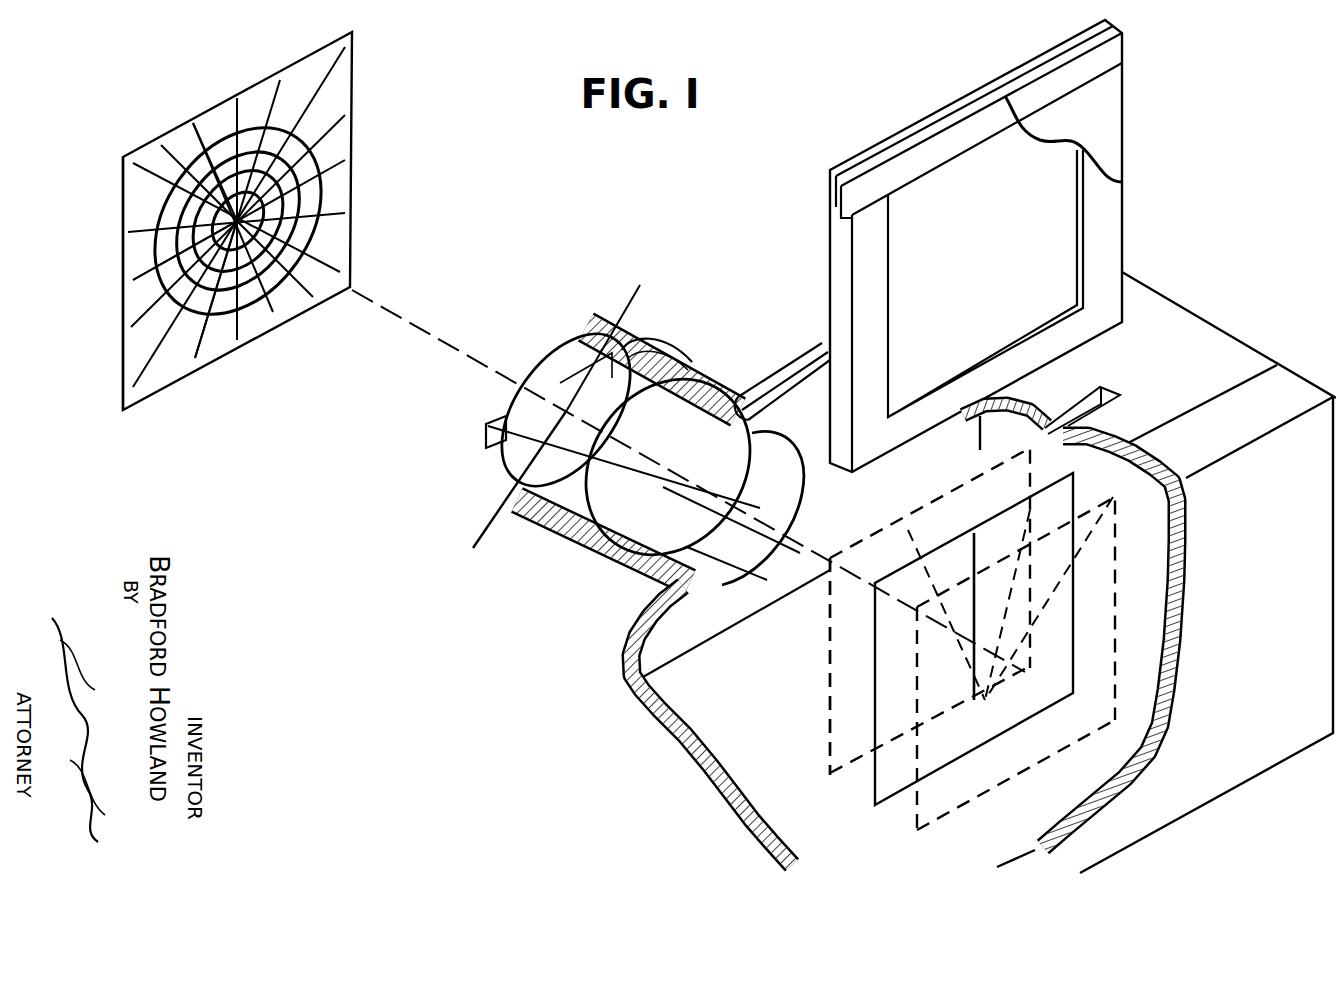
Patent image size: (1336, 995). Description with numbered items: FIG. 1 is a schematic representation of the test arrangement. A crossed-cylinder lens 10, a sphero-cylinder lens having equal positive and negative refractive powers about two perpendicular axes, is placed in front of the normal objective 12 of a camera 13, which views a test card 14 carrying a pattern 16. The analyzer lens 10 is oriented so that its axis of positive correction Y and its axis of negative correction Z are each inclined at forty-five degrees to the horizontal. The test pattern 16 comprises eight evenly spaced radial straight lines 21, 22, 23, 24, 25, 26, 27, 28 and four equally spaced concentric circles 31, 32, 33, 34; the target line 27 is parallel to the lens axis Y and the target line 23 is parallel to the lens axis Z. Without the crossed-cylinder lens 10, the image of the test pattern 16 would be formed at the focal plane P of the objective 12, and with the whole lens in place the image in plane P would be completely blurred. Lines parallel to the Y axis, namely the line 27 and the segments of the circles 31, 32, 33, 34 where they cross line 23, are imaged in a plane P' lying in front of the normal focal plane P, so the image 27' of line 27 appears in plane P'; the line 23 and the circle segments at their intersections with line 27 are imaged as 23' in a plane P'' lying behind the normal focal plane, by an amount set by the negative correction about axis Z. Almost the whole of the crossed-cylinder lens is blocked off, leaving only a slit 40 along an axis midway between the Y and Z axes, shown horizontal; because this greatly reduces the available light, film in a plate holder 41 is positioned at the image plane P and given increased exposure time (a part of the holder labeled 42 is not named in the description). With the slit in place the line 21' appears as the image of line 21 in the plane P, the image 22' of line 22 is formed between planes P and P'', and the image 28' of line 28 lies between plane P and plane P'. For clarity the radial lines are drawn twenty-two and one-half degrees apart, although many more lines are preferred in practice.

The crossed-cylinder lens 10 is at (510, 462).
The objective 12 is at (592, 532).
The camera 13 is at (792, 364).
The test card 14 is at (350, 78).
The test pattern 16 is at (130, 302).
The radial line 21 is at (208, 205).
The radial line 22 is at (237, 195).
The radial line 23 is at (239, 196).
The radial line 24 is at (347, 126).
The radial line 25 is at (347, 173).
The radial line 26 is at (347, 222).
The radial line 27 is at (278, 217).
The radial line 28 is at (264, 238).
The concentric circle 31 is at (257, 300).
The concentric circle 32 is at (213, 350).
The concentric circle 33 is at (185, 213).
The concentric circle 34 is at (207, 178).
The slit 40 is at (485, 432).
The plate holder 41 is at (1110, 134).
The screen window 42 is at (987, 258).
The image of line 21 21' is at (1002, 608).
The image of line 22 22' is at (1056, 585).
The image of line 23 23' is at (1075, 598).
The image of line 27 27' is at (848, 666).
The image of line 28 28' is at (946, 604).
The focal plane P is at (945, 650).
The image plane P' is at (902, 627).
The image plane P'' is at (989, 674).
The axis of positive correction Y is at (490, 358).
The axis of negative correction Z is at (496, 518).